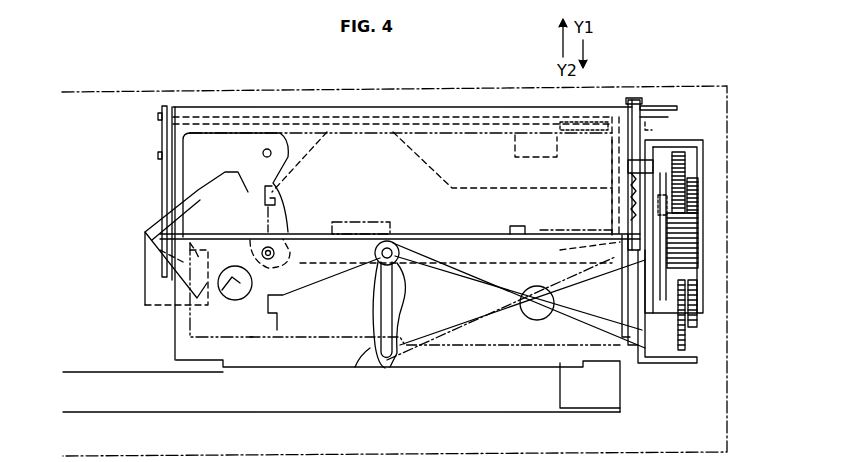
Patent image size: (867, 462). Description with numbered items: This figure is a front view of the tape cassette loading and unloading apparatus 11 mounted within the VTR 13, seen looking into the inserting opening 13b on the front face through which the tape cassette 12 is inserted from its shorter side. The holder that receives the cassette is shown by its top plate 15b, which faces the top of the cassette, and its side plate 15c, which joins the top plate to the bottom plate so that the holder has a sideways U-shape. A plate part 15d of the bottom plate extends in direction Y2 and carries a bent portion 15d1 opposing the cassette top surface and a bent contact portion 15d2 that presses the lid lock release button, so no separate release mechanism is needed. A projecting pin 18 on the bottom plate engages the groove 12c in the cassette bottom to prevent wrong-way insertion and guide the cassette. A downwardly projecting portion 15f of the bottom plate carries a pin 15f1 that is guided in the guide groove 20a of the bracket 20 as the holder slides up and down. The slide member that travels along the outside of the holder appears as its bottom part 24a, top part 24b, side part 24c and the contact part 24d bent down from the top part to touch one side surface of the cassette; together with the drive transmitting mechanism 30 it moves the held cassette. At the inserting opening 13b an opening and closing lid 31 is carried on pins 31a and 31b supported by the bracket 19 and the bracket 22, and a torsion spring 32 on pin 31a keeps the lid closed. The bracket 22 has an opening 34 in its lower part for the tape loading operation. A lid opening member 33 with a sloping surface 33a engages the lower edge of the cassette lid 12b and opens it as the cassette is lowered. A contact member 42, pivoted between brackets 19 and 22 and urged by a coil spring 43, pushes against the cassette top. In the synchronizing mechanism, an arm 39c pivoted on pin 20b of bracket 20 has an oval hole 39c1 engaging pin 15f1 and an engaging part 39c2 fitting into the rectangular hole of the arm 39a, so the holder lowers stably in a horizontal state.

The tape cassette loading and unloading apparatus 11 is at (342, 104).
The tape cassette 12 is at (291, 130).
The lid 12b is at (183, 172).
The groove 12c is at (495, 232).
The magnetic recording and/or reproducing apparatus 13 is at (124, 90).
The inserting opening 13b is at (437, 130).
The top plate 15b is at (572, 131).
The side plate 15c is at (612, 178).
The plate part 15d is at (414, 160).
The bent portion 15d1 is at (387, 122).
The bent contact portion 15d2 is at (277, 193).
The downwardly projecting portion 15f is at (343, 266).
The pin 15f1 is at (378, 285).
The projecting pin 18 is at (538, 228).
The bracket 19 is at (645, 118).
The bracket 20 is at (253, 364).
The guide groove 20a is at (352, 366).
The pin 20b is at (493, 320).
The bracket 22 is at (160, 137).
The bottom part 24a is at (562, 246).
The top part 24b is at (588, 116).
The side part 24c is at (652, 130).
The contact part 24d is at (515, 137).
The drive transmitting mechanism 30 is at (708, 210).
The opening and closing lid 31 is at (500, 110).
The pin 31a is at (648, 107).
The pin 31b is at (170, 106).
The torsion spring 32 is at (636, 100).
The lid opening member 33 is at (145, 276).
The sloping surface 33a is at (196, 248).
The opening 34 is at (182, 300).
The arm 39a is at (655, 348).
The arm 39c is at (515, 340).
The oval hole 39c1 is at (403, 288).
The engaging part 39c2 is at (630, 265).
The contact member 42 is at (268, 122).
The coil spring 43 is at (640, 188).